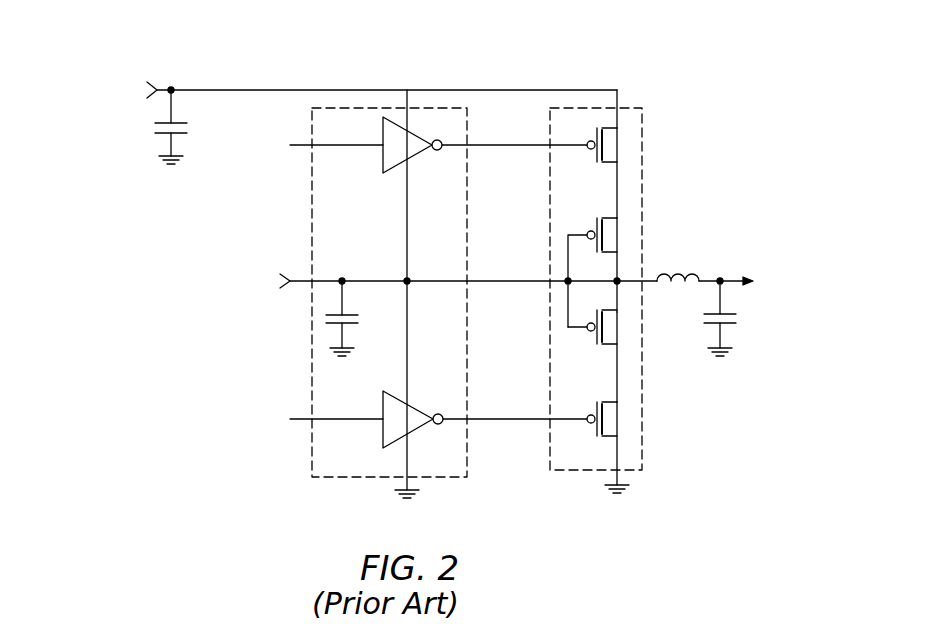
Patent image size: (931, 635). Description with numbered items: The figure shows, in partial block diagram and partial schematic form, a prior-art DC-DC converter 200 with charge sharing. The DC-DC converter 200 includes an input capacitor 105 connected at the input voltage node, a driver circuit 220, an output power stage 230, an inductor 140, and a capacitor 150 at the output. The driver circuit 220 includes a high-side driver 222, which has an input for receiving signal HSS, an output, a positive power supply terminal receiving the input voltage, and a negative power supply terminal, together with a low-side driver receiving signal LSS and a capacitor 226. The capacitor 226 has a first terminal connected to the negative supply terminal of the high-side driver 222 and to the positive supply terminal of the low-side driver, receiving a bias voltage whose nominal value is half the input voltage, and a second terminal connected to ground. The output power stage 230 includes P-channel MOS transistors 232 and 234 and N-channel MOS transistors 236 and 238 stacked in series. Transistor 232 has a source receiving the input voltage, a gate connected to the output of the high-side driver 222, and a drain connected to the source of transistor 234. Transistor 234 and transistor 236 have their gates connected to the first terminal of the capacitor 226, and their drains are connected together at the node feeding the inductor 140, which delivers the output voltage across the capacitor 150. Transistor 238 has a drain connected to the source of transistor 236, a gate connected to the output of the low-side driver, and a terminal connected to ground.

The DC-DC converter 200 is at (134, 34).
The input capacitor 105 is at (157, 133).
The driver circuit 220 is at (311, 127).
The high-side driver 222 is at (378, 156).
The capacitor 226 is at (345, 314).
The output power stage 230 is at (644, 148).
The P-channel MOS transistor 232 is at (603, 166).
The P-channel MOS transistor 234 is at (603, 257).
The N-channel MOS transistor 236 is at (603, 349).
The N-channel MOS transistor 238 is at (603, 441).
The inductor 140 is at (683, 278).
The capacitor 150 is at (735, 325).